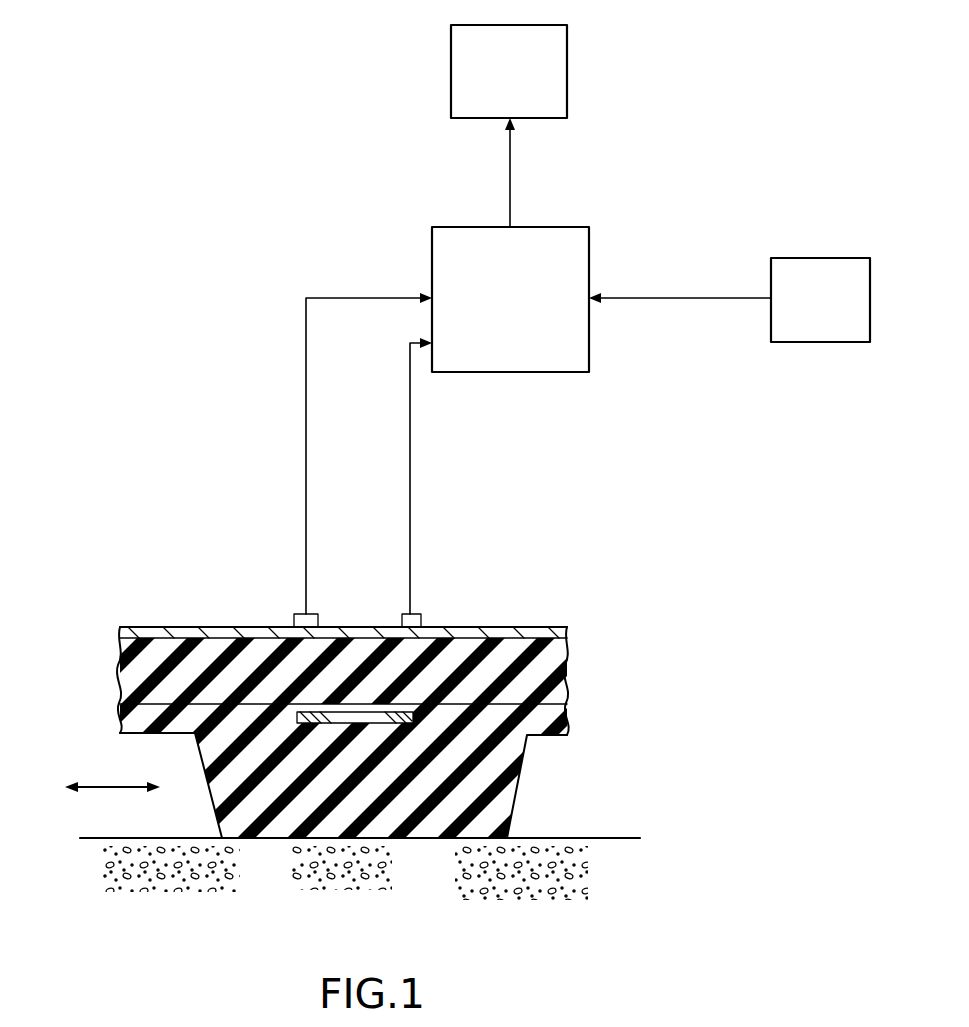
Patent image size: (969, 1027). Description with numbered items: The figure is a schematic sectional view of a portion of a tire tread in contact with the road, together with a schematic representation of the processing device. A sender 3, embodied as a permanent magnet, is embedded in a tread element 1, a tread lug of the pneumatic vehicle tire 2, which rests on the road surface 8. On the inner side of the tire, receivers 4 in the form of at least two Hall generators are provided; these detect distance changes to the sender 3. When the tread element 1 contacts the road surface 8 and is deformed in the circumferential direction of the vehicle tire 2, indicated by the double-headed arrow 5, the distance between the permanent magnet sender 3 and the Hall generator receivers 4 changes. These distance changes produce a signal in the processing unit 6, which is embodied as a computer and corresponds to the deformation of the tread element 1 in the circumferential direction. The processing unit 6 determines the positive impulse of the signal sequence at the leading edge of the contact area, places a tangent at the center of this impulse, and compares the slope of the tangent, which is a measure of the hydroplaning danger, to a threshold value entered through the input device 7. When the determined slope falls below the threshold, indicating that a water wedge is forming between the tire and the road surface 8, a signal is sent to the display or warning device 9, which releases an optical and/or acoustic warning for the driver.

The tread element 1 is at (288, 817).
The vehicle tire 2 is at (165, 632).
The sender 3 is at (410, 723).
The receivers 4 is at (295, 625).
The double-headed arrow 5 is at (100, 783).
The processing unit 6 is at (432, 248).
The input device 7 is at (771, 260).
The road surface 8 is at (588, 838).
The display or warning device 9 is at (567, 80).